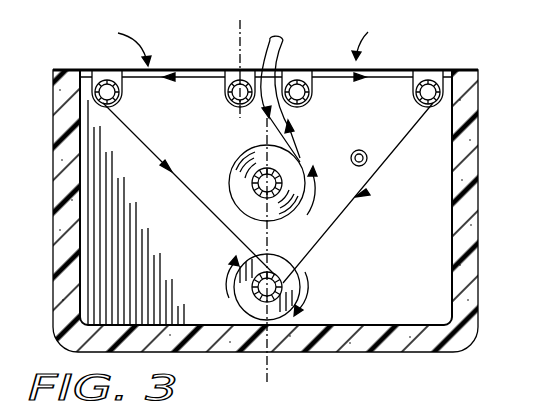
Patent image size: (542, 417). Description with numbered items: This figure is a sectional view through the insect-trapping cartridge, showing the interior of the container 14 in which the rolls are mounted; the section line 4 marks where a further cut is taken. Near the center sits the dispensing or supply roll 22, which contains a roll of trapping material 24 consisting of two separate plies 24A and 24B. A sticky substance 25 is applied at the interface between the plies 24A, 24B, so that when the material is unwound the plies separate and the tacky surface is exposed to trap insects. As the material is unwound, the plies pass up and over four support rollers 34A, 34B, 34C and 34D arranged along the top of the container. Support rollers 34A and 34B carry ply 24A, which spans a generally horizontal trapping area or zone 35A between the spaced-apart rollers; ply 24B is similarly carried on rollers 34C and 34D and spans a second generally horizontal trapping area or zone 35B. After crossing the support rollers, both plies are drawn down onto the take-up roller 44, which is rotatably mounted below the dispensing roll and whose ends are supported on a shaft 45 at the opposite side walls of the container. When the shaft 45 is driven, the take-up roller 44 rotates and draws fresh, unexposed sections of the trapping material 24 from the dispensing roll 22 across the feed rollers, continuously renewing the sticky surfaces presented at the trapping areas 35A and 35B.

The housing 14 is at (472, 190).
The dispensing or supply roll 22 is at (285, 207).
The trapping material 24 is at (277, 102).
The ply 24A is at (267, 118).
The ply 24B is at (293, 133).
The sticky substance 25 is at (276, 55).
The support roller 34A is at (107, 74).
The support roller 34B is at (226, 100).
The support roller 34C is at (312, 100).
The support roller 34D is at (434, 70).
The trapping area or zone 35A is at (124, 38).
The trapping area or zone 35B is at (370, 35).
The take-up roller 44 is at (300, 284).
The shaft 45 is at (252, 292).
The section line 4- 4 is at (258, 33).